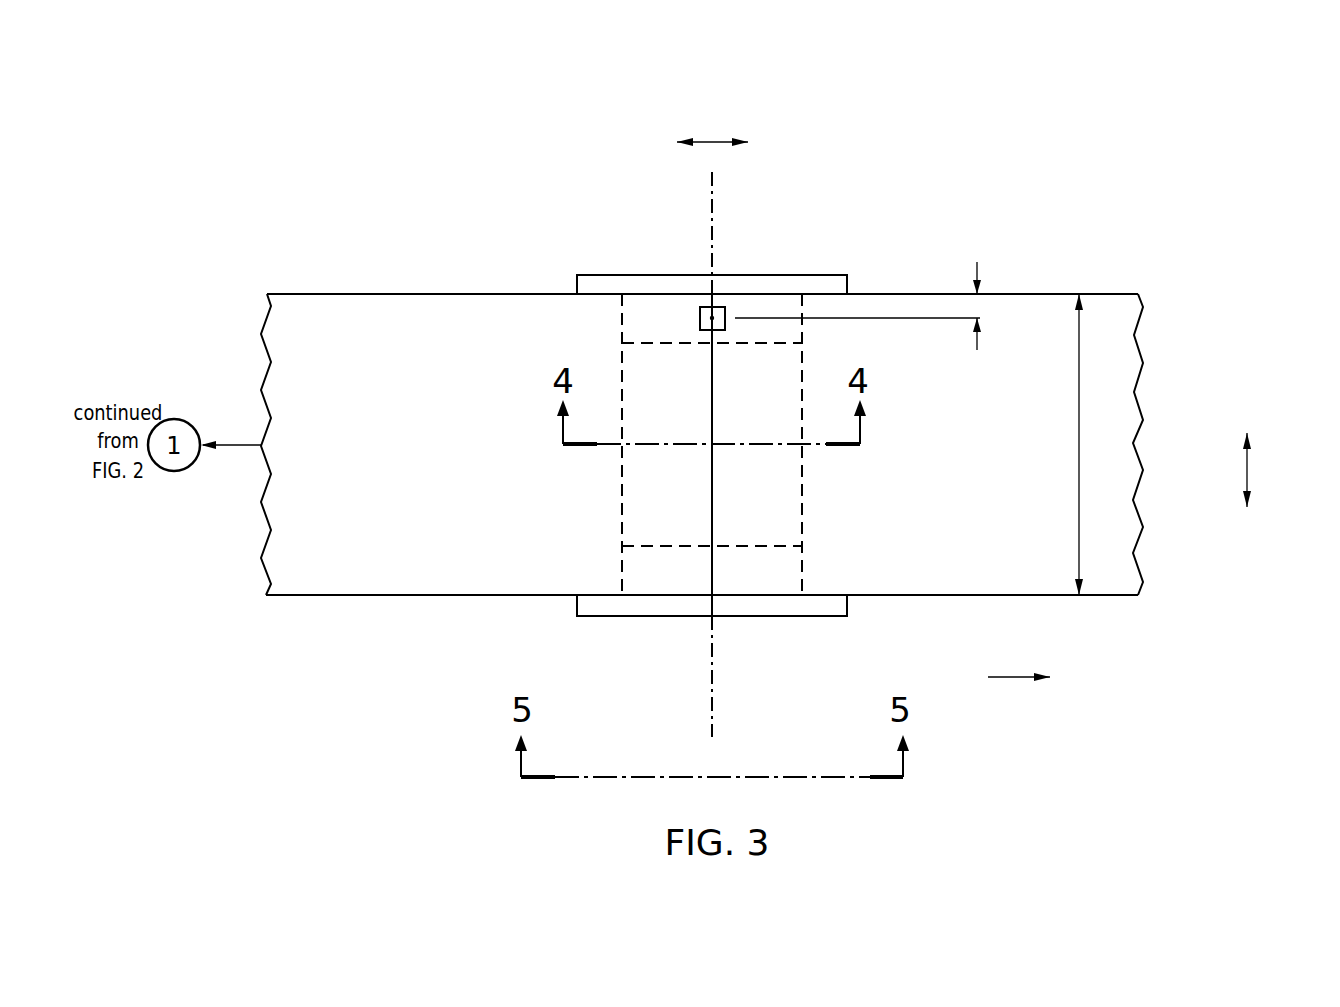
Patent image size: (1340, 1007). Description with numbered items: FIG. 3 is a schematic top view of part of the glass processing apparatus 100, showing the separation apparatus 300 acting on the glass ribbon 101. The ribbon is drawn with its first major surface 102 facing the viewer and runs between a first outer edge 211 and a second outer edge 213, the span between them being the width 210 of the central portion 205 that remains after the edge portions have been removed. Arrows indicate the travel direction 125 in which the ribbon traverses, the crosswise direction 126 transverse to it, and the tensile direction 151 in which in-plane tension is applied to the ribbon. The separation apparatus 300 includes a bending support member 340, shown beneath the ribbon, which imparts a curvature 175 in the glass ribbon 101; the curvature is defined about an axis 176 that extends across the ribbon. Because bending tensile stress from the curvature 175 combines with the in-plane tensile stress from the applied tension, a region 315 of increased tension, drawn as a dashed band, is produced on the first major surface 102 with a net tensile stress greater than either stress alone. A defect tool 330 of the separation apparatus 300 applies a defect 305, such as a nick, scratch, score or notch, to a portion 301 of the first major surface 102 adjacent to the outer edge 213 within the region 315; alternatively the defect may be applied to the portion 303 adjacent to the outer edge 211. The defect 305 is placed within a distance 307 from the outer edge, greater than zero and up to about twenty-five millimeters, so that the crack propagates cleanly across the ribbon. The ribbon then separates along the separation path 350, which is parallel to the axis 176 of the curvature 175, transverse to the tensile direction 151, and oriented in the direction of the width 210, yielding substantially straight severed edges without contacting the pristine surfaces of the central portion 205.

The glass processing apparatus 100 is at (1070, 125).
The glass ribbon 101 is at (302, 315).
The first major surface 102 is at (448, 467).
The travel direction 125 is at (1010, 677).
The crosswise direction 126 is at (1247, 470).
The tensile direction 151 is at (713, 142).
The curvature 175 is at (645, 634).
The axis of the curvature 176 is at (712, 690).
The central portion 205 is at (458, 318).
The width 210 is at (1078, 444).
The first outer edge 211 is at (330, 597).
The second outer edge 213 is at (365, 294).
The separation apparatus 300 is at (855, 224).
The portion of the first major surface 301 is at (632, 322).
The portion of the first major surface 303 is at (642, 570).
The defect 305 is at (730, 301).
The distance 307 is at (980, 262).
The region of increased tension 315 is at (785, 487).
The defect tool 330 is at (705, 305).
The bending support member 340 is at (820, 617).
The separation path 350 is at (712, 377).